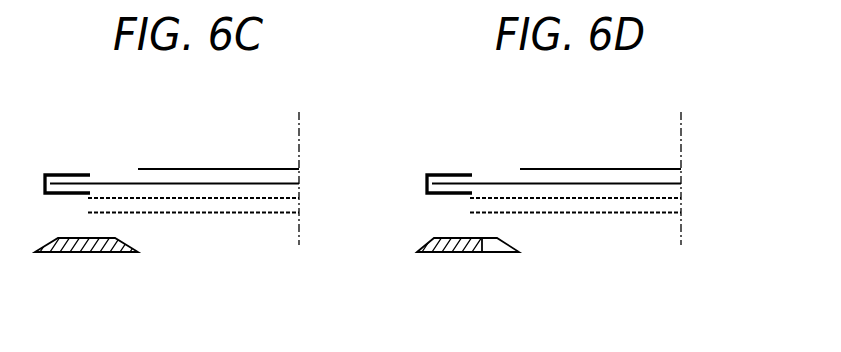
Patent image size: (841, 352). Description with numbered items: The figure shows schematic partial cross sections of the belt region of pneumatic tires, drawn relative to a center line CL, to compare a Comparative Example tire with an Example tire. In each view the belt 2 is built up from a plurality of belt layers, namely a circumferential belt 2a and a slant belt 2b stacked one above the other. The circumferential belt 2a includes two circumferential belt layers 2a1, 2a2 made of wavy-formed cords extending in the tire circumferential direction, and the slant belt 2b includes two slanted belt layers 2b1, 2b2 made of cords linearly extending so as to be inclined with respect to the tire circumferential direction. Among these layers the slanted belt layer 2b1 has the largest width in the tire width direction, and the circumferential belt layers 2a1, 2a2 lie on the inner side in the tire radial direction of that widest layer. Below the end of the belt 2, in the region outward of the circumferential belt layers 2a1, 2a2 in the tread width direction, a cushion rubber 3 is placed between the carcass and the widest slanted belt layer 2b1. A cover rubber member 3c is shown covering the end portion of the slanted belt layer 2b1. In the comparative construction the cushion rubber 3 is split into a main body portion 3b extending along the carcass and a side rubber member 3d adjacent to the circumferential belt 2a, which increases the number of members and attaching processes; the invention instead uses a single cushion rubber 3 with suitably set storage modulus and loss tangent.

In FIG. 6C, the belt 2 is at (234, 189).
In FIG. 6D, the belt 2 is at (616, 189).
In FIG. 6C, the circumferential belt 2a is at (239, 225).
In FIG. 6D, the circumferential belt 2a is at (621, 225).
In FIG. 6C, the circumferential belt layer 2a1 is at (285, 213).
In FIG. 6D, the circumferential belt layer 2a1 is at (600, 232).
In FIG. 6C, the circumferential belt layer 2a2 is at (292, 198).
In FIG. 6D, the circumferential belt layer 2a2 is at (600, 210).
In FIG. 6C, the slant belt 2b is at (220, 154).
In FIG. 6D, the slant belt 2b is at (602, 154).
In FIG. 6C, the slanted belt layer 2b1 is at (285, 184).
In FIG. 6D, the slanted belt layer 2b1 is at (581, 169).
In FIG. 6C, the slanted belt layer 2b2 is at (285, 169).
In FIG. 6D, the slanted belt layer 2b2 is at (625, 150).
In FIG. 6C, the cushion rubber 3 is at (88, 253).
In FIG. 6D, the cushion rubber 3 is at (472, 288).
In FIG. 6D, the main body portion 3b is at (462, 253).
In FIG. 6C, the cover rubber member 3c is at (63, 174).
In FIG. 6D, the cover rubber member 3c is at (451, 152).
In FIG. 6D, the side rubber member 3d is at (502, 265).
In FIG. 6C, the center line CL is at (298, 162).
In FIG. 6D, the center line CL is at (680, 162).